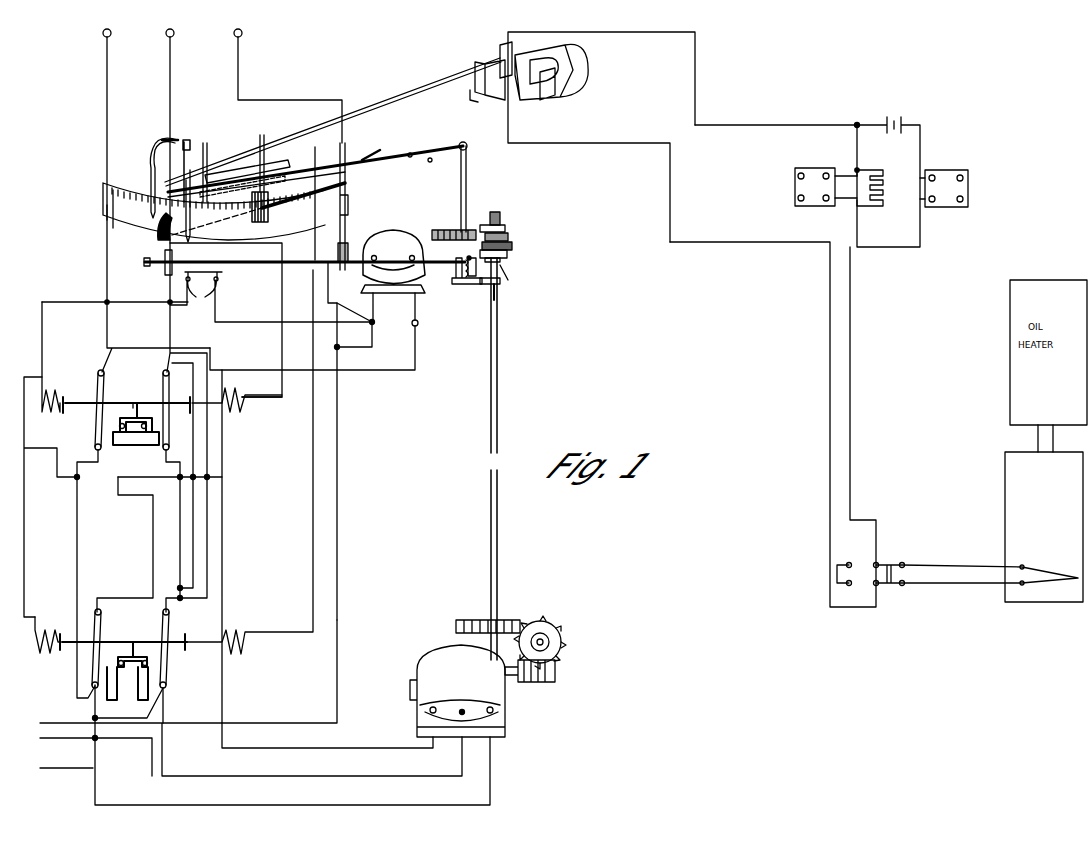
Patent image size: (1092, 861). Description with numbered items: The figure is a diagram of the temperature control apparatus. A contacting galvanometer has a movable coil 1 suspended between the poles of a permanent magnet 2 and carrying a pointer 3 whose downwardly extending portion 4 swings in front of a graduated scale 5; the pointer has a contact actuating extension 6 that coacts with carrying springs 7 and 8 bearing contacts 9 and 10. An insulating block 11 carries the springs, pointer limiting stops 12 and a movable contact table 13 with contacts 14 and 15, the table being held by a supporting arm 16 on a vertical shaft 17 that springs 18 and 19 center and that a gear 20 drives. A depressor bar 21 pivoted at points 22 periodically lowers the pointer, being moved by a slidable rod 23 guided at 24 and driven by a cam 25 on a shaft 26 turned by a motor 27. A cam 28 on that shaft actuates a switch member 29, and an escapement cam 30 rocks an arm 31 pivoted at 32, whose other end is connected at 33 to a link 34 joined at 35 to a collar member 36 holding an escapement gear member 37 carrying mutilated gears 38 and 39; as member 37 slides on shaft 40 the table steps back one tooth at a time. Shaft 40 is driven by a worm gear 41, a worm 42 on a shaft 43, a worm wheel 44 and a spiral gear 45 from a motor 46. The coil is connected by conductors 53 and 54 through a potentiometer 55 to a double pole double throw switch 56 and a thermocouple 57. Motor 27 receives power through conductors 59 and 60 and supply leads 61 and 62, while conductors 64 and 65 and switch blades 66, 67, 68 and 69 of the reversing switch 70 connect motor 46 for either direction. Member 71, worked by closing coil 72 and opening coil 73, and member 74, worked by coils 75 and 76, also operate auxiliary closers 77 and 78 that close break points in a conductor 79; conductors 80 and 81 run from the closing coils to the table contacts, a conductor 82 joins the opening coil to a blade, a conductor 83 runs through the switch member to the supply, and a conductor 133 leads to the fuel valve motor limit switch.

The movable coil 1 is at (488, 110).
The permanent magnet 2 is at (562, 95).
The pointer 3 is at (377, 100).
The downwardly extending portion 4 is at (146, 178).
The graduated scale 5 is at (102, 210).
The contact actuating extension 6 is at (186, 165).
The carrying spring 7 is at (150, 162).
The carrying spring 8 is at (278, 176).
The electrical contact 9 is at (172, 178).
The electrical contact 10 is at (268, 190).
The block of insulating material 11 is at (292, 166).
The pointer limiting stops 12 is at (258, 140).
The movable contact table 13 is at (200, 150).
The contact 14 is at (175, 210).
The contact 15 is at (260, 208).
The supporting arm 16 is at (400, 165).
The vertical shaft 17 is at (470, 175).
The spring 18 is at (410, 153).
The spring 19 is at (430, 162).
The gear 20 is at (458, 230).
The depressor bar 21 is at (160, 140).
The pivot points 22 is at (392, 148).
The vertically slidable rod 23 is at (348, 243).
The guide 24 is at (349, 207).
The cam 25 is at (348, 248).
The shaft 26 is at (298, 263).
The motor 27 is at (393, 255).
The cam 28 is at (205, 252).
The switch member 29 is at (200, 295).
The escapement actuating cam 30 is at (456, 278).
The arm 31 is at (485, 285).
The pivot 32 is at (502, 272).
The pivotal connection 33 is at (495, 298).
The vertically extending link 34 is at (502, 264).
The pivotal connection 35 is at (512, 253).
The collar member 36 is at (512, 246).
The escapement gear member 37 is at (508, 236).
The escapement gear 38 is at (502, 216).
The escapement gear 39 is at (495, 226).
The shaft 40 is at (499, 395).
The worm gear 41 is at (462, 636).
The worm 42 is at (545, 622).
The shaft 43 is at (549, 633).
The worm wheel or spiral gear 44 is at (556, 642).
The worm or spiral gear 45 is at (548, 682).
The motor 46 is at (500, 705).
The conductor 53 is at (750, 126).
The conductor 54 is at (732, 243).
The potentiometer 55 is at (884, 195).
The double pole double throw switch 56 is at (888, 562).
The pyrometer or thermocouple 57 is at (1015, 585).
The conductor 59 is at (378, 296).
The conductor 60 is at (419, 323).
The supply lead 61 is at (239, 78).
The supply lead 62 is at (171, 72).
The conductor 64 is at (164, 750).
The conductor 65 is at (108, 122).
The switch blade 66 is at (170, 628).
The switch blade 67 is at (102, 626).
The switch blade 68 is at (170, 390).
The switch blade 69 is at (104, 392).
The motor reversing switch 70 is at (137, 402).
The member 71 is at (186, 648).
The closing coil 72 is at (238, 650).
The opening coil 73 is at (38, 650).
The member 74 is at (180, 405).
The closing coil 75 is at (232, 408).
The opening coil 76 is at (44, 410).
The auxiliary circuit closing member 77 is at (134, 655).
The auxiliary circuit closing member 78 is at (130, 418).
The conductor 79 is at (152, 560).
The conductor 80 is at (280, 632).
The conductor 81 is at (280, 397).
The conductor 82 is at (52, 450).
The conductor 83 is at (70, 302).
The conductor 133 is at (60, 772).